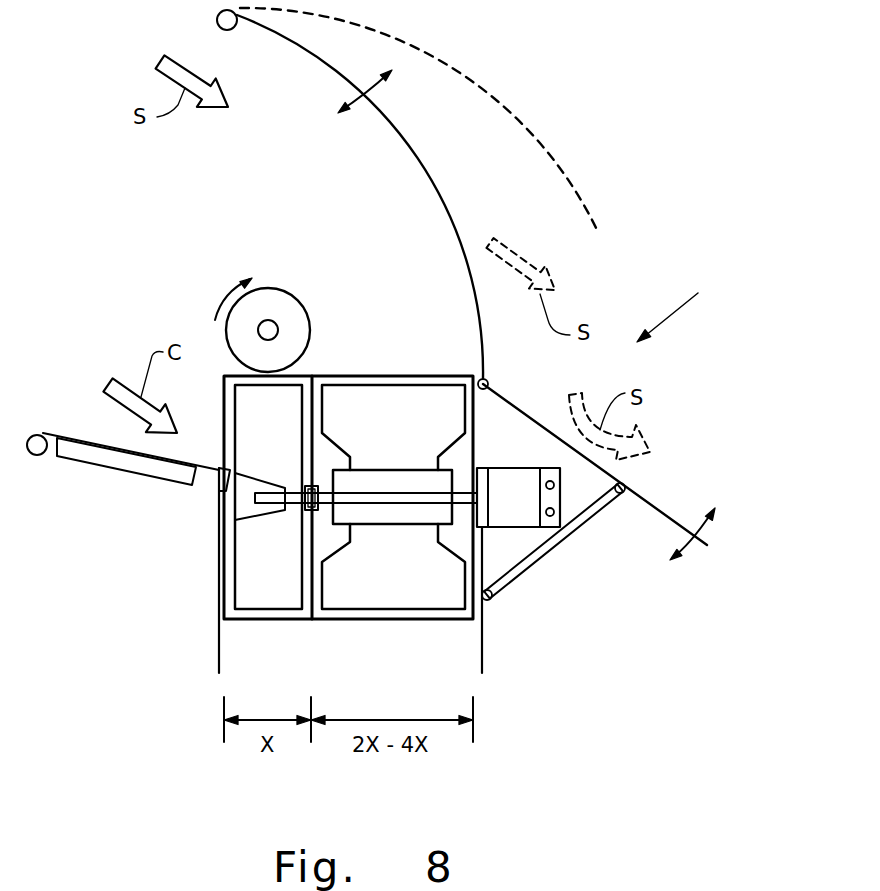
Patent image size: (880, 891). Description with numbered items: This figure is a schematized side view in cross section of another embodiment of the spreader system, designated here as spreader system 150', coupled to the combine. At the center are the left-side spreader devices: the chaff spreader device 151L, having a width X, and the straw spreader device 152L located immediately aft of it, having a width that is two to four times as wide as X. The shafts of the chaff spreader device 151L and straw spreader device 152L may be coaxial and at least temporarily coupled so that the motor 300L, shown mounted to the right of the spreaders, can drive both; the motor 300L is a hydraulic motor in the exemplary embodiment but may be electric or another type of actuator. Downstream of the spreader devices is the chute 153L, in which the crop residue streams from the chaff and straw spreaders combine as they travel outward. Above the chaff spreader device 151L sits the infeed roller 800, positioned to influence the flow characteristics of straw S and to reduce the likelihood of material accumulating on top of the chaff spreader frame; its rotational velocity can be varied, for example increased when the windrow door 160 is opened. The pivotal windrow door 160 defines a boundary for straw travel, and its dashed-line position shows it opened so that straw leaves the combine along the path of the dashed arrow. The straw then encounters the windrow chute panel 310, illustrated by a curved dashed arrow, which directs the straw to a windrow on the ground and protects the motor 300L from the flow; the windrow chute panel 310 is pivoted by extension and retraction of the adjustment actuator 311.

The windrow door 160 is at (423, 175).
The infeed roller 800 is at (283, 290).
The spreader system 150' is at (690, 306).
The windrow chute panel 310 is at (665, 510).
The adjustment actuator 311 is at (580, 528).
The motor 300L is at (515, 520).
The chaff spreader device 151L is at (261, 636).
The straw spreader device 152L is at (409, 635).
The chute 153L is at (218, 648).